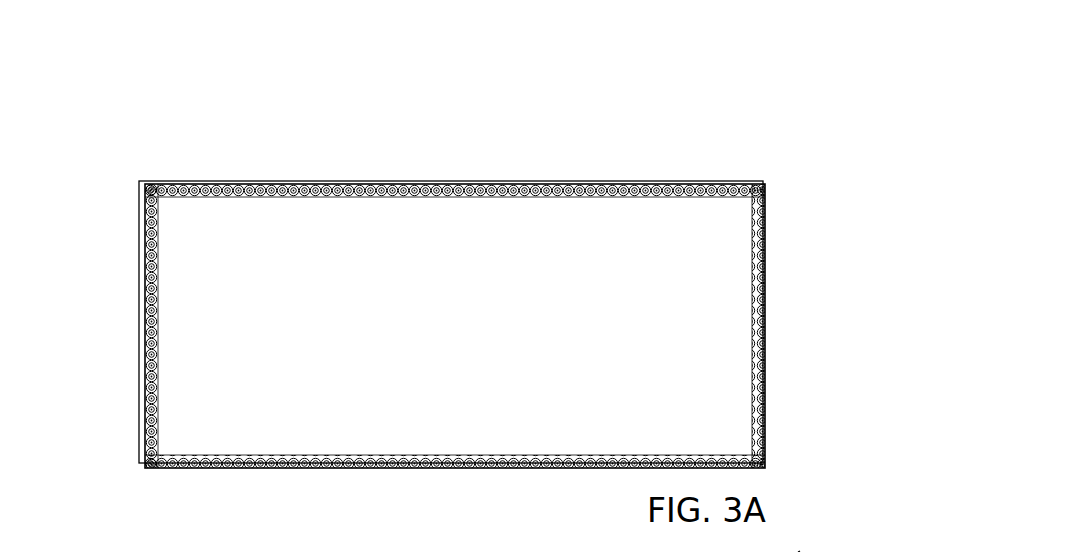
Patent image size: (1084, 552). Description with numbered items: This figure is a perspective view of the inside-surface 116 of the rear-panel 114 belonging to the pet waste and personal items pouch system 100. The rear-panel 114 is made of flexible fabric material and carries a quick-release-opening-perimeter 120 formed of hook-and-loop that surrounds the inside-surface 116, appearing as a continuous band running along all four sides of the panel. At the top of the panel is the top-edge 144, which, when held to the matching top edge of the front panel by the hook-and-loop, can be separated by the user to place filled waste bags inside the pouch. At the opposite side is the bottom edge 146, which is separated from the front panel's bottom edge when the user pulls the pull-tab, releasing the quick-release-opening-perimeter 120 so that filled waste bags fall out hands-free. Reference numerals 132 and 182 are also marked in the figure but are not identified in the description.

The pet waste and personal items pouch system 100 is at (406, 267).
The rear-panel 114 is at (139, 283).
The inside-surface 116 is at (262, 434).
The quick-release-opening-perimeter 120 is at (455, 320).
The perimeter band 132 is at (455, 296).
The top-edge 144 is at (338, 178).
The bottom edge 146 is at (478, 474).
The component 182 is at (800, 551).